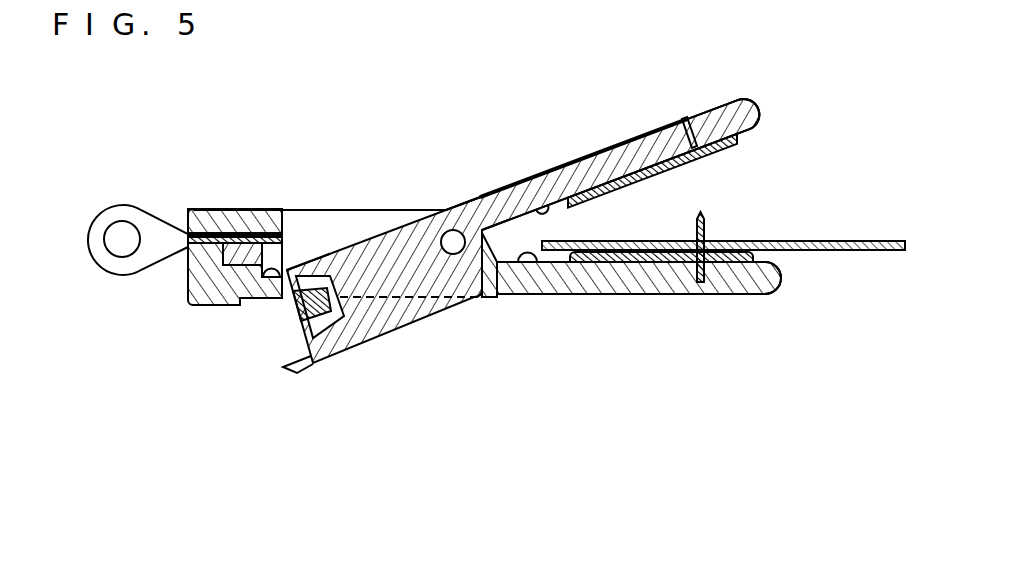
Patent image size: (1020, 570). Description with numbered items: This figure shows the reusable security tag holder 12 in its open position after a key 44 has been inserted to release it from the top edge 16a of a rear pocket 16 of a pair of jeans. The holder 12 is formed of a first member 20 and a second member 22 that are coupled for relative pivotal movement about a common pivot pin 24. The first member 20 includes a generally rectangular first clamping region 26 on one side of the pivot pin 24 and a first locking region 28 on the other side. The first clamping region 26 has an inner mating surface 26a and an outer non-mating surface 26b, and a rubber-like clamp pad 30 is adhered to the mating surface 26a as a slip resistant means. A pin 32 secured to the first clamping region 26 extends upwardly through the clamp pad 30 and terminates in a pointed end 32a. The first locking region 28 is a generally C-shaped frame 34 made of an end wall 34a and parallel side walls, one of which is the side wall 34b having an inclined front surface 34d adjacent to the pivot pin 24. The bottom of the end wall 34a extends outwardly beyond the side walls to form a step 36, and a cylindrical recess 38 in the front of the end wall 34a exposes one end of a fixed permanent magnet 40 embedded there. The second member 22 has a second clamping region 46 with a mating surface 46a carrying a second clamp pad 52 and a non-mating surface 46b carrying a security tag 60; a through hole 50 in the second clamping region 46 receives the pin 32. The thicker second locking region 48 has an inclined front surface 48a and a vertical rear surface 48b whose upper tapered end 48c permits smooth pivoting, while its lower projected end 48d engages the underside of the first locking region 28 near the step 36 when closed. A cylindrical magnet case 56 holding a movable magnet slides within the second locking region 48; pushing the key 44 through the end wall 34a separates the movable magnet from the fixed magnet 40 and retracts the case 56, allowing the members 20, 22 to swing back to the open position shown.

The security tag holder 12 is at (472, 430).
The rear pocket 16 is at (865, 240).
The top edge 16a is at (590, 240).
The first member 20 is at (787, 280).
The second member 22 is at (740, 110).
The pivot pin 24 is at (455, 230).
The first clamping region 26 is at (638, 295).
The mating surface 26a is at (528, 275).
The non-mating surface 26b is at (572, 265).
The first locking region 28 is at (190, 250).
The clamp pad 30 is at (682, 265).
The pin 32 is at (729, 262).
The pointed end 32a is at (704, 222).
The C-shaped frame 34 is at (273, 210).
The end wall 34a is at (210, 210).
The side wall 34b is at (380, 215).
The inclined front surface 34d is at (495, 285).
The step 36 is at (242, 300).
The cylindrical recess 38 is at (260, 273).
The fixed permanent magnet 40 is at (188, 287).
The key 44 is at (93, 250).
The second clamping region 46 is at (708, 112).
The mating surface 46a is at (540, 206).
The non-mating surface 46b is at (482, 195).
The second locking region 48 is at (407, 317).
The inclined front surface 48a is at (490, 276).
The rear surface 48b is at (306, 367).
The tapered end 48c is at (311, 255).
The projected end 48d is at (293, 373).
The through hole 50 is at (686, 117).
The clamp pad 52 is at (718, 158).
The magnet case 56 is at (347, 314).
The security tag 60 is at (580, 152).